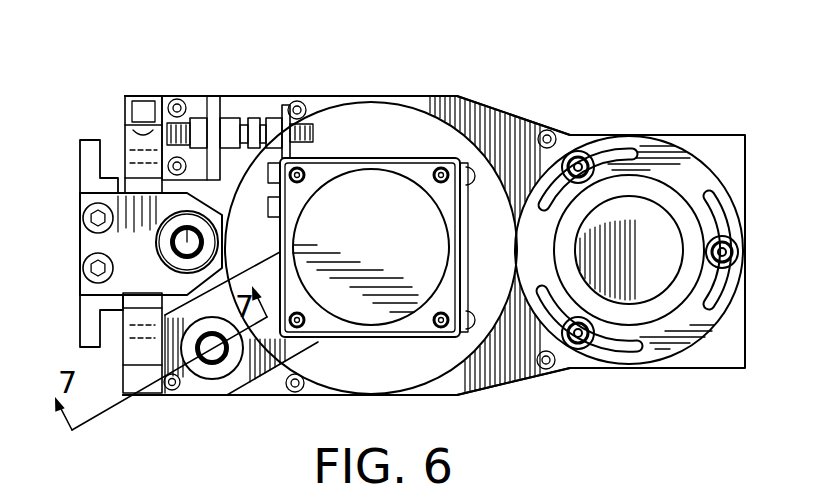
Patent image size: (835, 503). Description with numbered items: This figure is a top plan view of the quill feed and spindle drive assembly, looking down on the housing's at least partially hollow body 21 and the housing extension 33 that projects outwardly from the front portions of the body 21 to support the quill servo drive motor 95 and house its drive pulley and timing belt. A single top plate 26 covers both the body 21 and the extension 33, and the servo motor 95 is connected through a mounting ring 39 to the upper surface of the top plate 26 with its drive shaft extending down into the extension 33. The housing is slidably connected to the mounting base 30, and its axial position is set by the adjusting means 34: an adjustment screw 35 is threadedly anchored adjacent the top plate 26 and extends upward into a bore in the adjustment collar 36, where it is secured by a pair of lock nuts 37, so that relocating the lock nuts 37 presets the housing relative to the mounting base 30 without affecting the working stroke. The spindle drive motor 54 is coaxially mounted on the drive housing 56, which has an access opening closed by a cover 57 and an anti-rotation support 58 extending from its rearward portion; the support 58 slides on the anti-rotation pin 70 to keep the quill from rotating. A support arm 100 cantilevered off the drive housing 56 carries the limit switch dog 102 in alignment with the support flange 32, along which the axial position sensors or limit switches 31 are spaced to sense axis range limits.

The hollow body 21 is at (340, 88).
The top plate 26 is at (515, 130).
The mounting base 30 is at (87, 165).
The axial position sensors 31 is at (237, 112).
The support flange 32 is at (217, 95).
The housing extension 33 is at (709, 124).
The means for selectively adjusting the axial position of housing 34 is at (108, 249).
The adjustment screw 35 is at (186, 212).
The adjustment collar 36 is at (130, 237).
The lock nuts 37 is at (205, 233).
The mounting ring 39 is at (715, 183).
The spindle drive motor 54 is at (388, 236).
The drive housing 56 is at (400, 157).
The cover 57 is at (468, 251).
The anti-rotation support 58 is at (235, 378).
The anti-rotation pin 70 is at (211, 362).
The servo motor 95 is at (656, 241).
The support arm 100 is at (283, 153).
The limit switch dog 102 is at (260, 128).